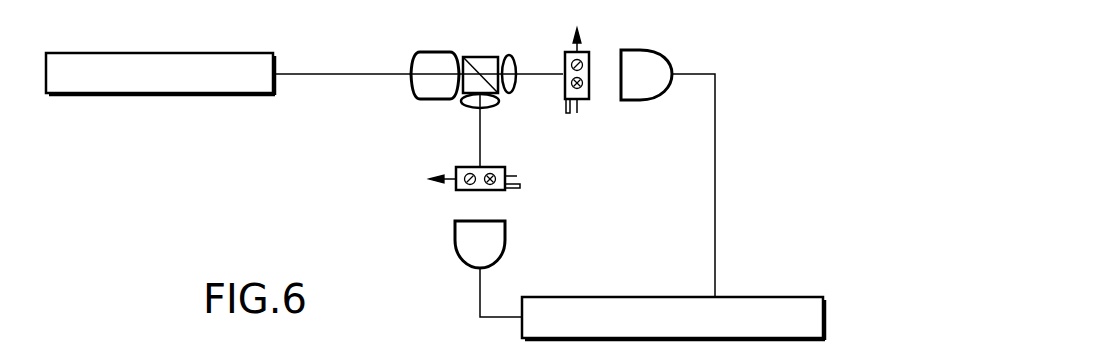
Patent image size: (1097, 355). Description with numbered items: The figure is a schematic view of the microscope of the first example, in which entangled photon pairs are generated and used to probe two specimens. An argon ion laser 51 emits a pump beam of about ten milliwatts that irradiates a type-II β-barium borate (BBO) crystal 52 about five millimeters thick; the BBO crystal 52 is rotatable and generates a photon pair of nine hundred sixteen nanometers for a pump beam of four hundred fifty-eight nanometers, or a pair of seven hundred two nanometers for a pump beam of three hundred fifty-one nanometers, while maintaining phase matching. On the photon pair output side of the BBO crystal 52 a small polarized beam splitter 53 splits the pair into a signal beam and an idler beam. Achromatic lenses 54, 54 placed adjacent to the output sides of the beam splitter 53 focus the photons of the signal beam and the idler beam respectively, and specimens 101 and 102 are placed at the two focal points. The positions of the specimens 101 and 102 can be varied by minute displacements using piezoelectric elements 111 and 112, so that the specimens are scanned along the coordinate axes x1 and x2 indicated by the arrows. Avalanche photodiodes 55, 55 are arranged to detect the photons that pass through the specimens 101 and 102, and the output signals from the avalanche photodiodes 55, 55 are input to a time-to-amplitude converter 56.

The argon ion laser 51 is at (141, 52).
The β-barium borate (BBO) crystal 52 is at (412, 56).
The polarized beam splitter 53 is at (481, 57).
The achromatic lens 54 is at (511, 55).
The avalanche photodiode 55 is at (657, 56).
The time-to-amplitude converter 56 is at (748, 297).
The specimen 101 is at (585, 101).
The specimen 102 is at (494, 166).
The piezoelectric element 111 is at (569, 113).
The piezoelectric element 112 is at (521, 186).